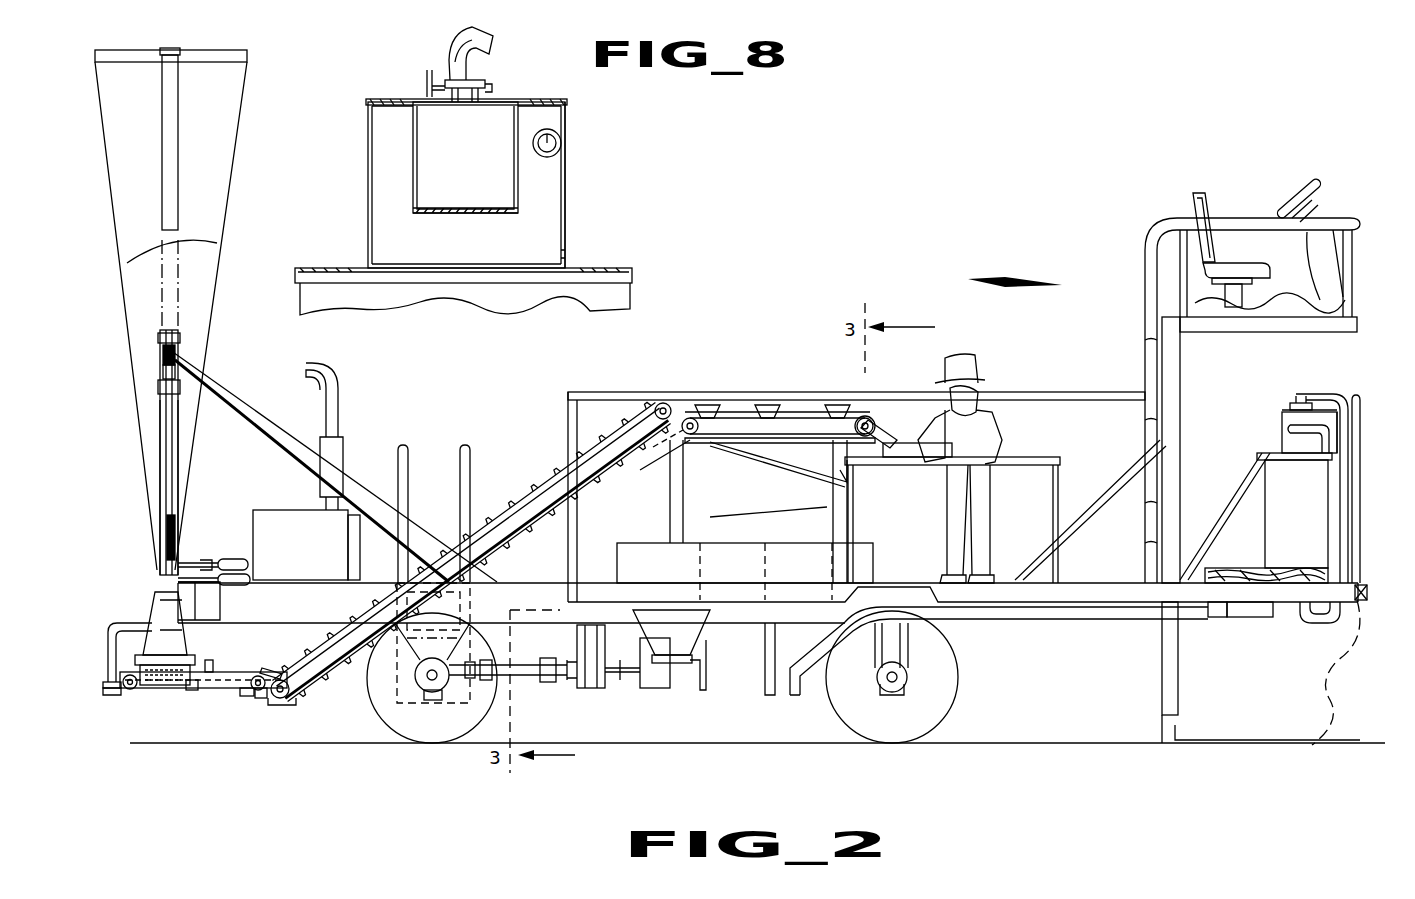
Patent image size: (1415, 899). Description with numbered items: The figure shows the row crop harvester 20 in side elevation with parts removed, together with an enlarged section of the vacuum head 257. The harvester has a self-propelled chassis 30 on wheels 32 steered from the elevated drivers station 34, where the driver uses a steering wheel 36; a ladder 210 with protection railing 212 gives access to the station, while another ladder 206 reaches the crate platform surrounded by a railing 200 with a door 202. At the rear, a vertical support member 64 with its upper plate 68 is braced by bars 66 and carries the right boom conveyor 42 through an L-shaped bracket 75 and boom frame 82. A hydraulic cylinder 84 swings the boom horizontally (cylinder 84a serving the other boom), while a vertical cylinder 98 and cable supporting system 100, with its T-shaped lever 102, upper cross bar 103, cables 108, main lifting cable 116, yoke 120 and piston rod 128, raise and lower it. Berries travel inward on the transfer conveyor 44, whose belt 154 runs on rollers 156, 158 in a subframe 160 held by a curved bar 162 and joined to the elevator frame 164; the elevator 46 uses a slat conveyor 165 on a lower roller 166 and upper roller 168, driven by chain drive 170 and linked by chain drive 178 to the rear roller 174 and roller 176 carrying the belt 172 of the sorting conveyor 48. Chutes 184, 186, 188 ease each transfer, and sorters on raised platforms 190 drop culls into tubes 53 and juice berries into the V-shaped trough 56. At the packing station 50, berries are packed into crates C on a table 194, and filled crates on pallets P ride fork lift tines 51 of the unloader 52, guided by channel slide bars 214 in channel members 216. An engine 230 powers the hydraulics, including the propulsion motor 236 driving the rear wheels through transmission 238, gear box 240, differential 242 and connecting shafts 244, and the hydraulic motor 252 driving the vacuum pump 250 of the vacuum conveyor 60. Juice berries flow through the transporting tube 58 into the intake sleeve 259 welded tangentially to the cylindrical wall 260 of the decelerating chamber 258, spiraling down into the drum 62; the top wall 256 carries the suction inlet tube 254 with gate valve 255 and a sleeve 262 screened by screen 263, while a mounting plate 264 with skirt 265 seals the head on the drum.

In FIG. 2, the row crop harvester 20 is at (888, 252).
In FIG. 2, the self-propelled chassis 30 is at (506, 582).
In FIG. 2, the wheels 32 is at (392, 718).
In FIG. 2, the elevated drivers station 34 is at (1242, 212).
In FIG. 2, the steering wheel 36 is at (1265, 225).
In FIG. 2, the right boom conveyor 42 is at (173, 686).
In FIG. 2, the transfer conveyor 44 is at (237, 672).
In FIG. 2, the elevator 46 is at (498, 512).
In FIG. 2, the sorting conveyor 48 is at (784, 414).
In FIG. 2, the packing station 50 is at (1012, 457).
In FIG. 2, the fork lift tines 51 is at (1328, 700).
In FIG. 2, the unloader 52 is at (1158, 658).
In FIG. 2, the tubes 53 is at (706, 518).
In FIG. 2, the V-shaped trough 56 is at (730, 453).
In FIG. 2, the berry transporting tube 58 is at (850, 525).
In FIG. 8, the vacuum conveyor 60 is at (395, 98).
In FIG. 2, the vacuum conveyor 60 is at (1280, 439).
In FIG. 8, the bulk storage drum 62 is at (632, 298).
In FIG. 2, the bulk storage drum 62 is at (1296, 514).
In FIG. 2, the support member 64 is at (180, 445).
In FIG. 2, the bars 66 is at (233, 398).
In FIG. 2, the upper plate 68 is at (160, 335).
In FIG. 2, the L-shaped fabricated bracket 75 is at (172, 614).
In FIG. 2, the boom conveyor frame 82 is at (193, 692).
In FIG. 2, the hydraulic cylinder 84 is at (238, 559).
In FIG. 2, the horizontal adjustment boom cylinder 84a is at (234, 585).
In FIG. 2, the hydraulic cylinder 98 is at (160, 458).
In FIG. 2, the cable supporting system 100 is at (241, 104).
In FIG. 2, the cable support lever 102 is at (162, 121).
In FIG. 2, the upper cross bar 103 is at (247, 56).
In FIG. 2, the cables 108 is at (217, 243).
In FIG. 2, the main lifting cable 116 is at (162, 373).
In FIG. 2, the yoke 120 is at (162, 350).
In FIG. 2, the piston rod 128 is at (160, 395).
In FIG. 2, the endless conveyor belt 154 is at (246, 696).
In FIG. 2, the roller 156 is at (108, 696).
In FIG. 2, the forward roller 158 is at (261, 700).
In FIG. 2, the subframe 160 is at (211, 660).
In FIG. 2, the curved bar 162 is at (128, 624).
In FIG. 2, the elevator frame 164 is at (340, 656).
In FIG. 2, the endless slat conveyor 165 is at (560, 458).
In FIG. 2, the lower roller 166 is at (284, 698).
In FIG. 2, the upper roller 168 is at (668, 402).
In FIG. 2, the chain drive 170 is at (282, 706).
In FIG. 2, the endless belt 172 is at (722, 404).
In FIG. 2, the rear conveyor roller 174 is at (680, 452).
In FIG. 2, the roller 176 is at (872, 416).
In FIG. 2, the chain drive 178 is at (660, 448).
In FIG. 2, the chute 184 is at (272, 668).
In FIG. 2, the chute 186 is at (692, 416).
In FIG. 2, the chute 188 is at (889, 430).
In FIG. 2, the raised platforms 190 is at (655, 543).
In FIG. 2, the table 194 is at (1056, 457).
In FIG. 2, the railing 200 is at (1100, 390).
In FIG. 2, the door 202 is at (1360, 440).
In FIG. 2, the ladder 206 is at (470, 460).
In FIG. 2, the ladder 210 is at (1146, 312).
In FIG. 2, the protection railing 212 is at (1335, 220).
In FIG. 2, the channel slide bars 214 is at (1180, 732).
In FIG. 2, the channel members 216 is at (1180, 683).
In FIG. 2, the internal combustion engine 230 is at (306, 471).
In FIG. 2, the vehicle propulsion hydraulic motor 236 is at (708, 624).
In FIG. 2, the transmission 238 is at (596, 690).
In FIG. 2, the gear box 240 is at (656, 690).
In FIG. 2, the differential 242 is at (446, 702).
In FIG. 2, the connecting shafts 244 is at (531, 664).
In FIG. 2, the vacuum pump 250 is at (1268, 618).
In FIG. 2, the hydraulic motor 252 is at (1216, 617).
In FIG. 8, the suction inlet tube 254 is at (446, 39).
In FIG. 2, the suction inlet tube 254 is at (1322, 413).
In FIG. 8, the gate valve 255 is at (487, 77).
In FIG. 2, the gate valve 255 is at (1302, 400).
In FIG. 8, the top wall 256 is at (540, 100).
In FIG. 2, the top wall 256 is at (1290, 410).
In FIG. 8, the vacuum head 257 is at (568, 112).
In FIG. 2, the vacuum head 257 is at (1280, 420).
In FIG. 8, the decelerating chamber 258 is at (530, 202).
In FIG. 8, the berry intake sleeve 259 is at (562, 143).
In FIG. 8, the cylindrical wall 260 is at (566, 175).
In FIG. 8, the sleeve 262 is at (413, 143).
In FIG. 8, the screen 263 is at (462, 215).
In FIG. 8, the mounting plate 264 is at (588, 266).
In FIG. 8, the skirt 265 is at (632, 280).
In FIG. 2, the crates C is at (925, 458).
In FIG. 2, the pallets P is at (1322, 570).